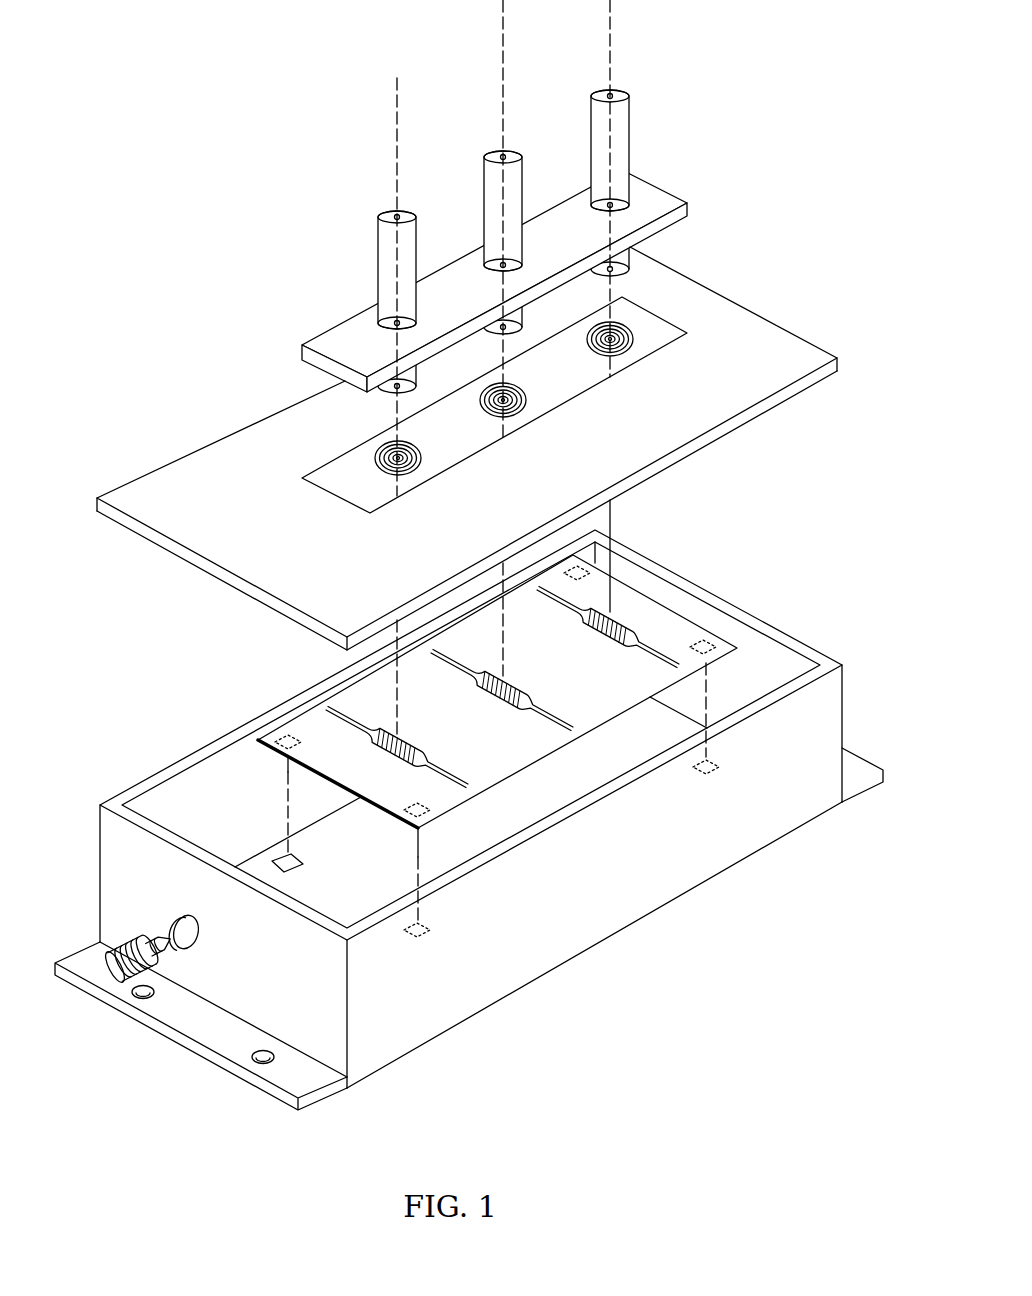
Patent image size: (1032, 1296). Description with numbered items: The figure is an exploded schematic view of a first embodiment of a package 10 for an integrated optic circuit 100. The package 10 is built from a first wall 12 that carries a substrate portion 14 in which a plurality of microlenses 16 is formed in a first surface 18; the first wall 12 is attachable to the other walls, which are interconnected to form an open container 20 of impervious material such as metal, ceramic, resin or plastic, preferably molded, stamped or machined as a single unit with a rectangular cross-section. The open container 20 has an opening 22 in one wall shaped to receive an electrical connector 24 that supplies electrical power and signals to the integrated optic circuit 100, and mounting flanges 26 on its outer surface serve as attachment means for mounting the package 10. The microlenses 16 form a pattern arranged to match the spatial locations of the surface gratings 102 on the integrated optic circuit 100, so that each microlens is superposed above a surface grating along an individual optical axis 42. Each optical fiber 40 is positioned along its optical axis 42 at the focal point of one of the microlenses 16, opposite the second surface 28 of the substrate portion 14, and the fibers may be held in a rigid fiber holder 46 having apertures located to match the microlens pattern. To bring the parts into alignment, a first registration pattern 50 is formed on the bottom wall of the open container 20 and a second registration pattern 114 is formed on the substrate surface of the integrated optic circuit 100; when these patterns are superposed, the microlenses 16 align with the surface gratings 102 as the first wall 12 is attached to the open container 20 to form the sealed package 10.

The package 10 is at (737, 960).
The first wall 12 is at (467, 448).
The substrate portion 14 is at (484, 405).
The microlenses 16 is at (417, 463).
The first surface 18 is at (768, 414).
The open container 20 is at (98, 833).
The opening 22 is at (175, 920).
The electrical connector 24 is at (123, 960).
The mounting flanges 26 is at (193, 1015).
The second surface 28 is at (767, 347).
The optical fiber 40 is at (378, 255).
The optical axis 42 is at (397, 122).
The fiber holder 46 is at (347, 315).
The first registration pattern 50 is at (298, 868).
The integrated optic circuit 100 is at (483, 691).
The surface gratings 102 is at (403, 742).
The second registration pattern 114 is at (297, 745).